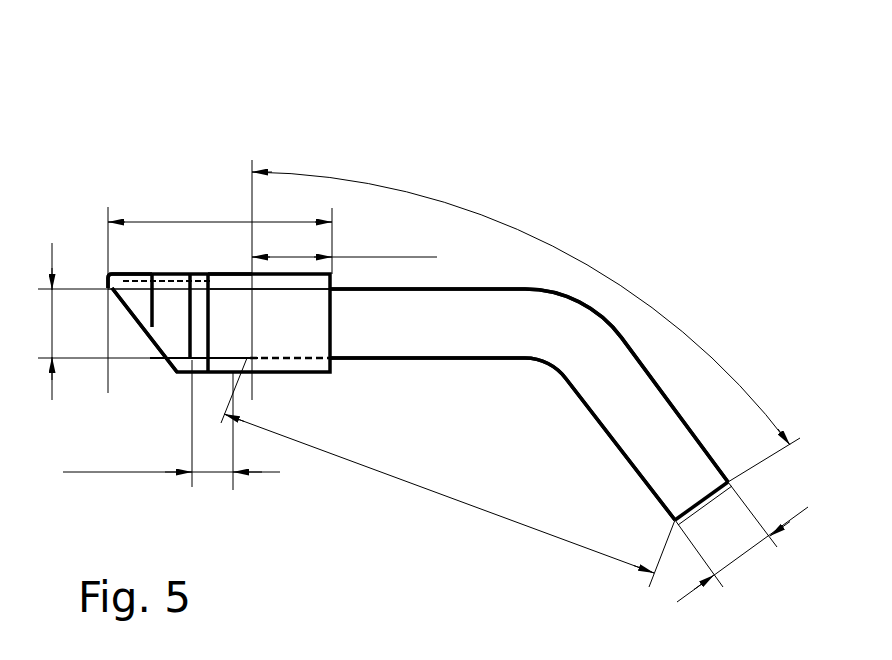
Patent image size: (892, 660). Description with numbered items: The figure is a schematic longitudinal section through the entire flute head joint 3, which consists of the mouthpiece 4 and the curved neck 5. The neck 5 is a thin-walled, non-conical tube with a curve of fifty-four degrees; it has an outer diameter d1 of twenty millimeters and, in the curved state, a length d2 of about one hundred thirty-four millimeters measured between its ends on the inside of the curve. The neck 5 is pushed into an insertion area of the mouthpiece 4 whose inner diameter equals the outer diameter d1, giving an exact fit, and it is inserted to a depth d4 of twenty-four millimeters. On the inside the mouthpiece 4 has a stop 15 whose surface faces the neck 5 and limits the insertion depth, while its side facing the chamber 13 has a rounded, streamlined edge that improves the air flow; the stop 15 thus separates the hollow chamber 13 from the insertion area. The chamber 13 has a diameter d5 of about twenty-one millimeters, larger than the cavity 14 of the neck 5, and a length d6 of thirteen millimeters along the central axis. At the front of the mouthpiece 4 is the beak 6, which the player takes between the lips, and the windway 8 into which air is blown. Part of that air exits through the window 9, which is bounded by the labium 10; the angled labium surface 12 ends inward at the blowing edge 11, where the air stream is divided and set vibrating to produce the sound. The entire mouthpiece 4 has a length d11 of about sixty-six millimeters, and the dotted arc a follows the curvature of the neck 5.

The flute head joint 3 is at (572, 142).
The mouthpiece 4 is at (182, 185).
The neck 5 is at (667, 343).
The beak 6 is at (118, 274).
The windway 8 is at (110, 282).
The window 9 is at (206, 249).
The labium 10 is at (231, 262).
The blowing edge 11 is at (216, 291).
The labium surface 12 is at (240, 278).
The chamber 13 is at (222, 333).
The cavity 14 is at (385, 327).
The stop 15 is at (245, 358).
The arc a is at (500, 210).
The outer diameter d1 is at (743, 553).
The length d2 is at (485, 515).
The depth d4 is at (298, 257).
The diameter d5 is at (55, 315).
The length d6 is at (215, 474).
The length d11 is at (280, 222).